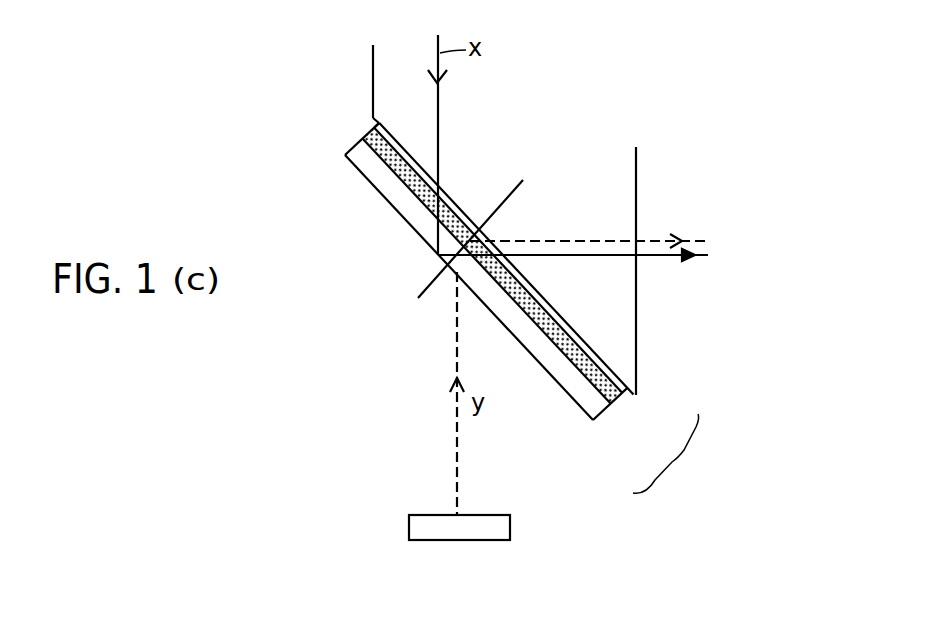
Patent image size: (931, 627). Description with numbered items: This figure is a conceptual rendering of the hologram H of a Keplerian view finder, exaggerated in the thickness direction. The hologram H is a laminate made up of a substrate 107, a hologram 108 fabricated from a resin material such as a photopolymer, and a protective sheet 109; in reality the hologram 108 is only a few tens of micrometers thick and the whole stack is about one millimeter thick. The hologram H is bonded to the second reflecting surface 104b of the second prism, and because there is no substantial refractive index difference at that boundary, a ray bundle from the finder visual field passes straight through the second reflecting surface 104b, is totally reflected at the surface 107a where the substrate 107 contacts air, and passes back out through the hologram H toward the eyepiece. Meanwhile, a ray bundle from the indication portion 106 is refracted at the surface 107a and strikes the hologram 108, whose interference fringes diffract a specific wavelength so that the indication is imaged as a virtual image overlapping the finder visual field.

The second reflecting surface 104b is at (445, 192).
The surface of contact of the substrate with air 107a is at (362, 178).
The substrate 107 is at (603, 418).
The hologram 108 is at (618, 400).
The protective sheet 109 is at (623, 397).
The hologram H is at (671, 457).
The indication portion 106 is at (472, 540).